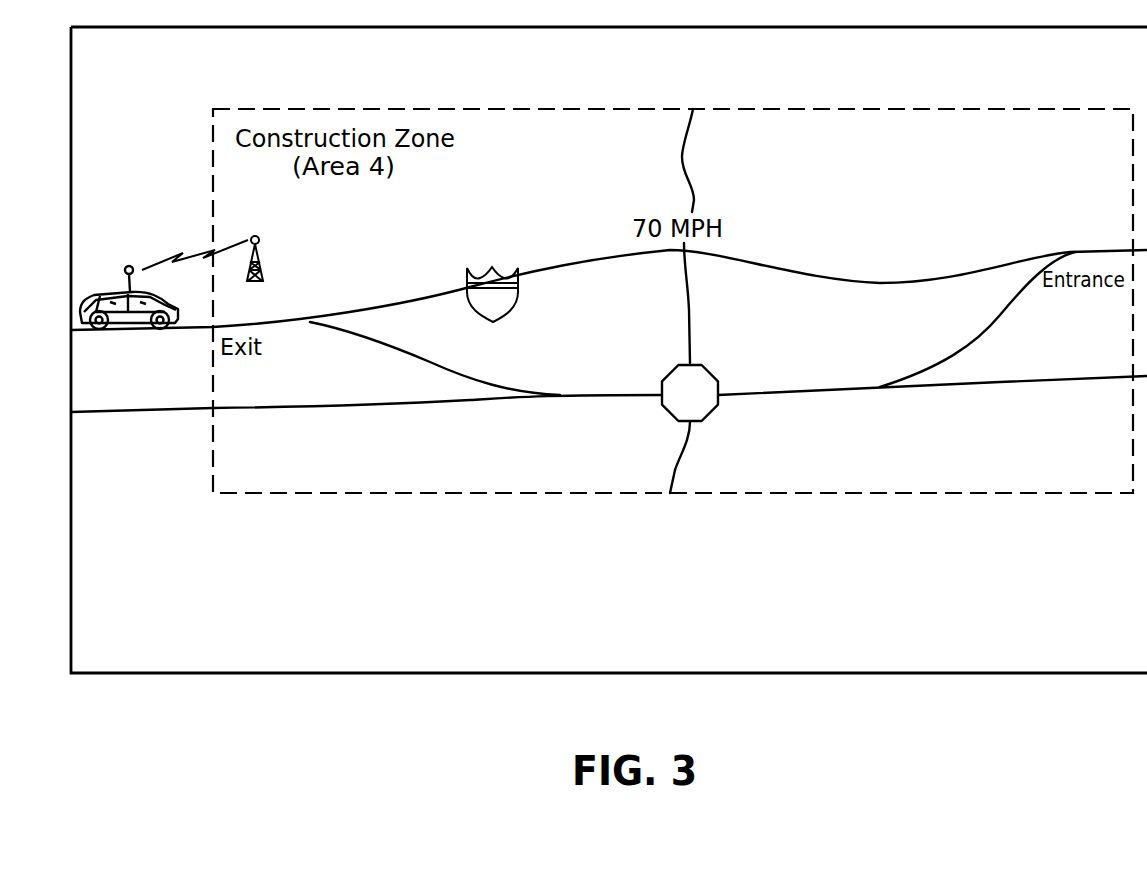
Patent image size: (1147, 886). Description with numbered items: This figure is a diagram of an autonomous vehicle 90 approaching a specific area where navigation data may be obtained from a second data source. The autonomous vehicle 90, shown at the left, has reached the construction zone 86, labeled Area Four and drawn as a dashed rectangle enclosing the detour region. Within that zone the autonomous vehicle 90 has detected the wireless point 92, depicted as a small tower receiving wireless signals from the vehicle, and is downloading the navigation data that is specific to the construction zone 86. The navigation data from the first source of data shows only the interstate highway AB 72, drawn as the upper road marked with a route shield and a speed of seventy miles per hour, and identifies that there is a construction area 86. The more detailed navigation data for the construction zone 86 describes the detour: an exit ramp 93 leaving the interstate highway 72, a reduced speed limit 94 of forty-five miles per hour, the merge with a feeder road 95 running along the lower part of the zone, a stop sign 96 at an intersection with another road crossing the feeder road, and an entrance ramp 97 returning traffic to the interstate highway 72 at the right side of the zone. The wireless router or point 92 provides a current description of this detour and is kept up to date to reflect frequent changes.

The construction zone 86 is at (938, 109).
The autonomous vehicle 90 is at (113, 291).
The wireless point 92 is at (263, 262).
The exit ramp 93 is at (357, 330).
The reduced speed limit 94 is at (425, 322).
The interstate highway AB 72 is at (482, 272).
The merge with a feeder road 95 is at (560, 367).
The stop sign 96 is at (697, 363).
The entrance ramp 97 is at (975, 352).